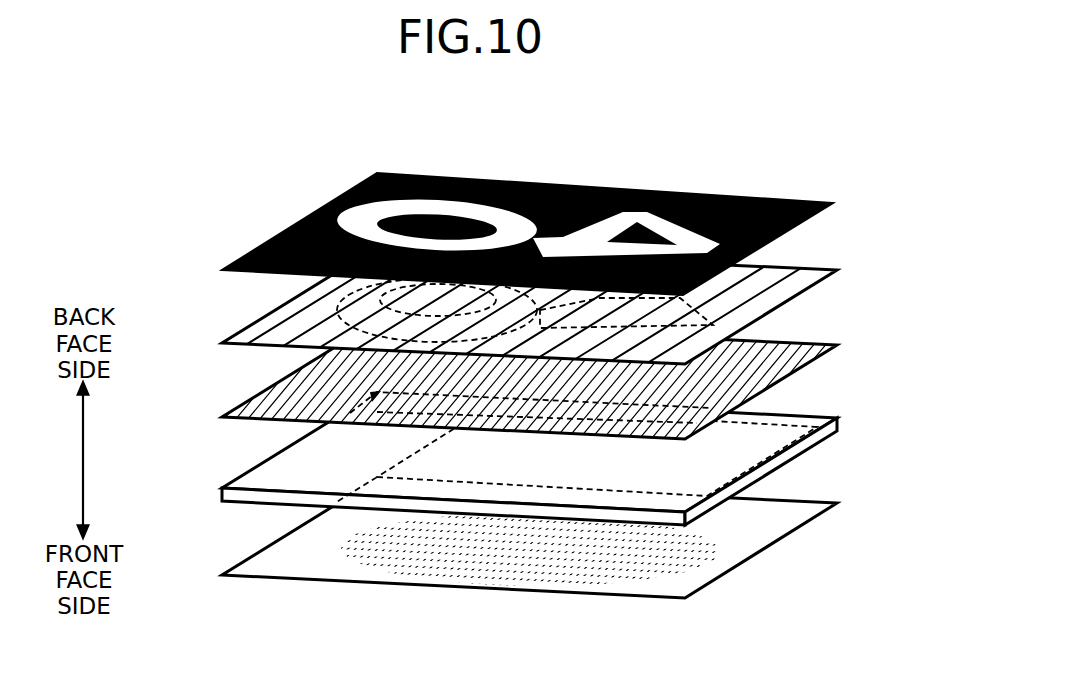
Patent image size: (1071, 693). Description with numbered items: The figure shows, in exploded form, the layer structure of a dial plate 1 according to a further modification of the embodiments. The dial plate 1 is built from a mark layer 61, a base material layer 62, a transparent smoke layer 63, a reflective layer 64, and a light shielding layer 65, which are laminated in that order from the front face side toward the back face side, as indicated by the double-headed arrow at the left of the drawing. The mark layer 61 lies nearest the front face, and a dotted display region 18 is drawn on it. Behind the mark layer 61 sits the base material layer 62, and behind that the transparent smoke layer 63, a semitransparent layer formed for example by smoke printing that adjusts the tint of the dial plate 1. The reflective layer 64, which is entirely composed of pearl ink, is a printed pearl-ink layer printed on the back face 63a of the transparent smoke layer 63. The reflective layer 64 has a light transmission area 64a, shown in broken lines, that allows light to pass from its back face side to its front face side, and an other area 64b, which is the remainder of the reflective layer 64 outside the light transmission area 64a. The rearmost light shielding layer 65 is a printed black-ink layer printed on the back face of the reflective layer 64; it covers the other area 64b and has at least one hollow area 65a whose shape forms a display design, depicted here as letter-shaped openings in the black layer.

The dial plate 1 is at (312, 133).
The display region 18 is at (716, 535).
The mark layer 61 is at (694, 579).
The base material layer 62 is at (768, 441).
The transparent smoke layer 63 is at (796, 360).
The back face of transparent smoke layer 63a is at (762, 353).
The reflective layer 64 is at (536, 306).
The light transmission area 64a is at (562, 325).
The other area 64b is at (775, 281).
The light shielding layer 65 is at (571, 209).
The hollow area 65a is at (510, 218).